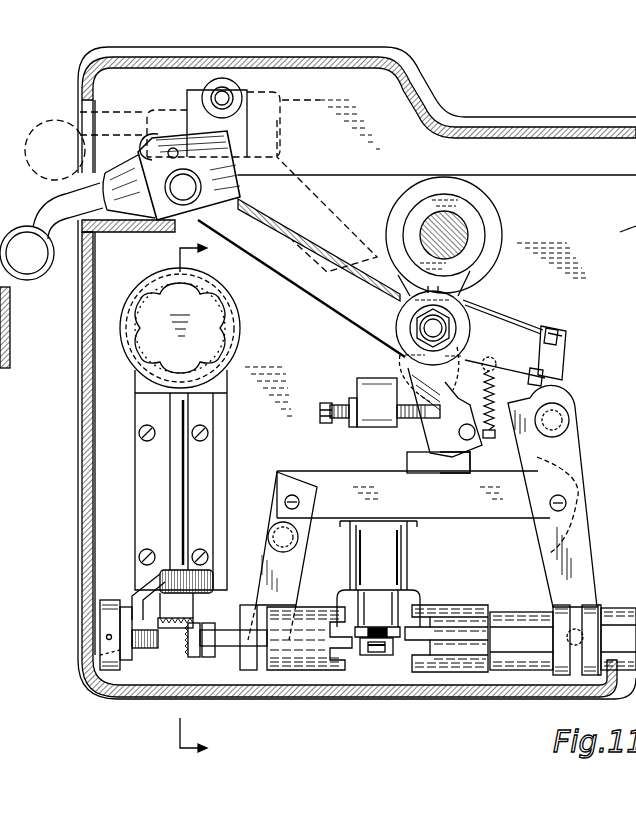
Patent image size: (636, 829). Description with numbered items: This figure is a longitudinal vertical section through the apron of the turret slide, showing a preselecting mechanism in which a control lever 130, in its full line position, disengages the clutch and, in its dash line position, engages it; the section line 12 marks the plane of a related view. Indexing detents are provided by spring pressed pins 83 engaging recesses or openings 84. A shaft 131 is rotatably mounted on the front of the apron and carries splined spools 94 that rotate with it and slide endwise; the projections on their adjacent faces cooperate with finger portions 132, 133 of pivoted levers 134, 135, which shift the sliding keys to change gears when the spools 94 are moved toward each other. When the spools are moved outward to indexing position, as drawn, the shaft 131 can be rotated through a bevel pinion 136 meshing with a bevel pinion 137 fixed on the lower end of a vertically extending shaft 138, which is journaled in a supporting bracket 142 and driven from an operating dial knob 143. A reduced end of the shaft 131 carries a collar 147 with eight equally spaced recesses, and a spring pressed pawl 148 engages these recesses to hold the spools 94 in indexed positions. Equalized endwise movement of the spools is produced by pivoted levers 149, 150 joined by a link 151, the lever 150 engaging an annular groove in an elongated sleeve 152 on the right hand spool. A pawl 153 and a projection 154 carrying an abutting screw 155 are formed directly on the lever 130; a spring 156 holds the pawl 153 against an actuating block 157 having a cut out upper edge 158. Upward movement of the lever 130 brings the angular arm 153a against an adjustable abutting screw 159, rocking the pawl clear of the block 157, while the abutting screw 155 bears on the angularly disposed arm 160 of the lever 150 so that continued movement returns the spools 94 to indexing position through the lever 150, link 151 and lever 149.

The section line 12- 12 is at (202, 509).
The spring pressed pin 83 is at (147, 150).
The recess or opening 84 is at (225, 92).
The spool 94 is at (293, 605).
The control lever 130 is at (317, 285).
The shaft 131 is at (230, 650).
The finger portion 132 is at (382, 655).
The finger portion 133 is at (388, 600).
The pivoted lever 134 is at (375, 655).
The pivoted lever 135 is at (397, 607).
The bevel pinion 136 is at (193, 645).
The bevel pinion 137 is at (177, 630).
The vertically extending shaft 138 is at (180, 483).
The supporting bracket 142 is at (220, 463).
The operating dial knob 143 is at (5, 352).
The collar 147 is at (100, 615).
The spring pressed pawl 148 is at (100, 650).
The pivoted lever 149 is at (263, 565).
The pivoted lever 150 is at (583, 565).
The link 151 is at (447, 510).
The elongated sleeve 152 is at (520, 662).
The pawl 153 is at (433, 443).
The angular arm 153a is at (483, 368).
The projection 154 is at (565, 360).
The abutting screw 155 is at (545, 382).
The spring 156 is at (493, 376).
The actuating block 157 is at (408, 462).
The cut out upper edge 158 is at (470, 458).
The adjustable abutting screw 159 is at (345, 408).
The angularly disposed arm 160 is at (570, 415).